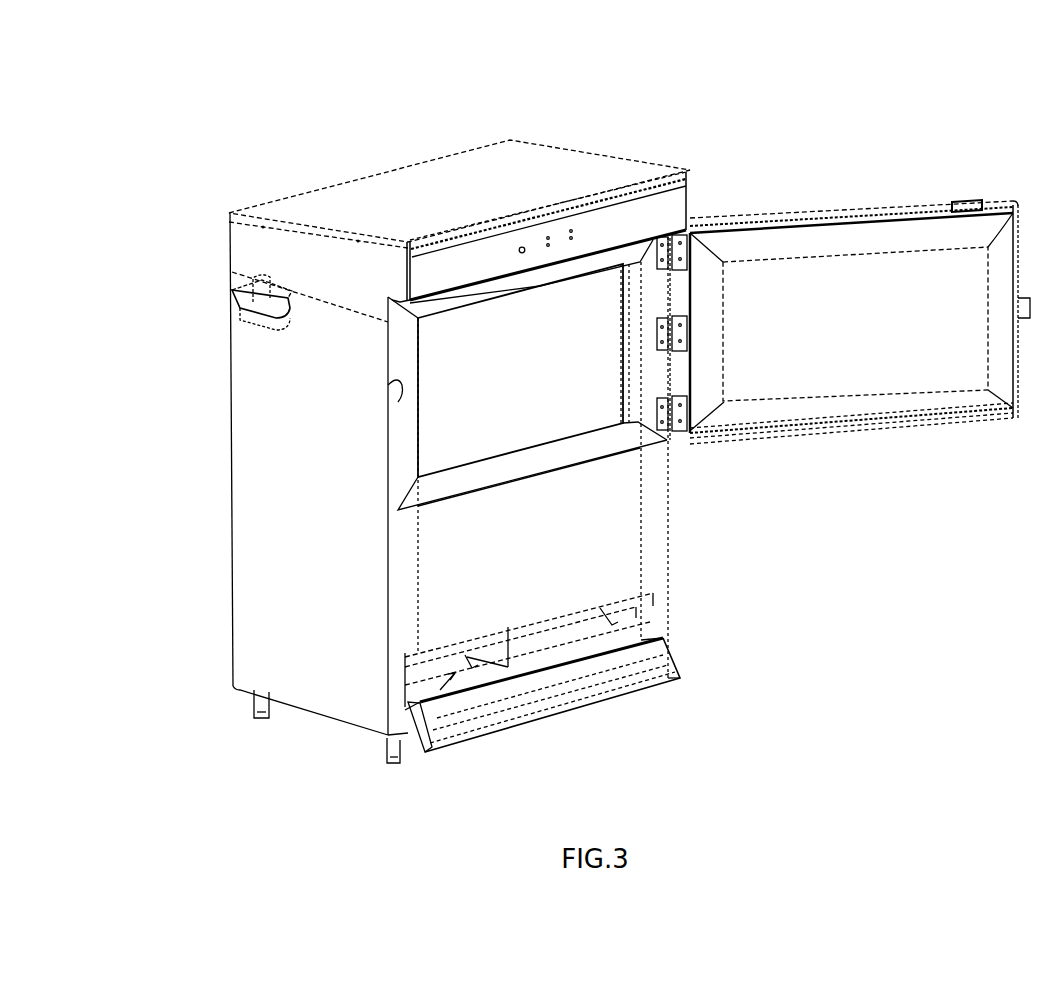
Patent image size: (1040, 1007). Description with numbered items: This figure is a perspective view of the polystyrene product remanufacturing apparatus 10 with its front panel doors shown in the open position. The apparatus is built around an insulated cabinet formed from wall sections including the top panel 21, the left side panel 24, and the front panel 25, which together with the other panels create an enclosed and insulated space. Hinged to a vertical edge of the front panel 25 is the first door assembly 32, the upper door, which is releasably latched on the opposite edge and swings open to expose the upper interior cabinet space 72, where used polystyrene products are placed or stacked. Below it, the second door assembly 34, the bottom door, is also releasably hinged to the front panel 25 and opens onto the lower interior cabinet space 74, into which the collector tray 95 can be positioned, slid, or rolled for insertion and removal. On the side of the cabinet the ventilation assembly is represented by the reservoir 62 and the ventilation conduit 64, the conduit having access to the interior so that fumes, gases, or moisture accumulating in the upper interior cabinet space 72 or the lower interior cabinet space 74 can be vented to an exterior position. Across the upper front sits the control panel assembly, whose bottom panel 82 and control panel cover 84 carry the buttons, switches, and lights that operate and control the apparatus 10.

The polystyrene product remanufacturing apparatus 10 is at (593, 122).
The top panel 21 is at (418, 204).
The left side panel 24 is at (330, 479).
The front panel 25 is at (506, 554).
The first door assembly 32 is at (882, 333).
The second door assembly 34 is at (563, 685).
The reservoir 62 is at (248, 310).
The ventilation conduit 64 is at (262, 279).
The upper interior cabinet space 72 is at (508, 377).
The lower interior cabinet space 74 is at (418, 703).
The bottom panel 82 is at (678, 424).
The control panel cover 84 is at (643, 638).
The collector tray 95 is at (678, 675).